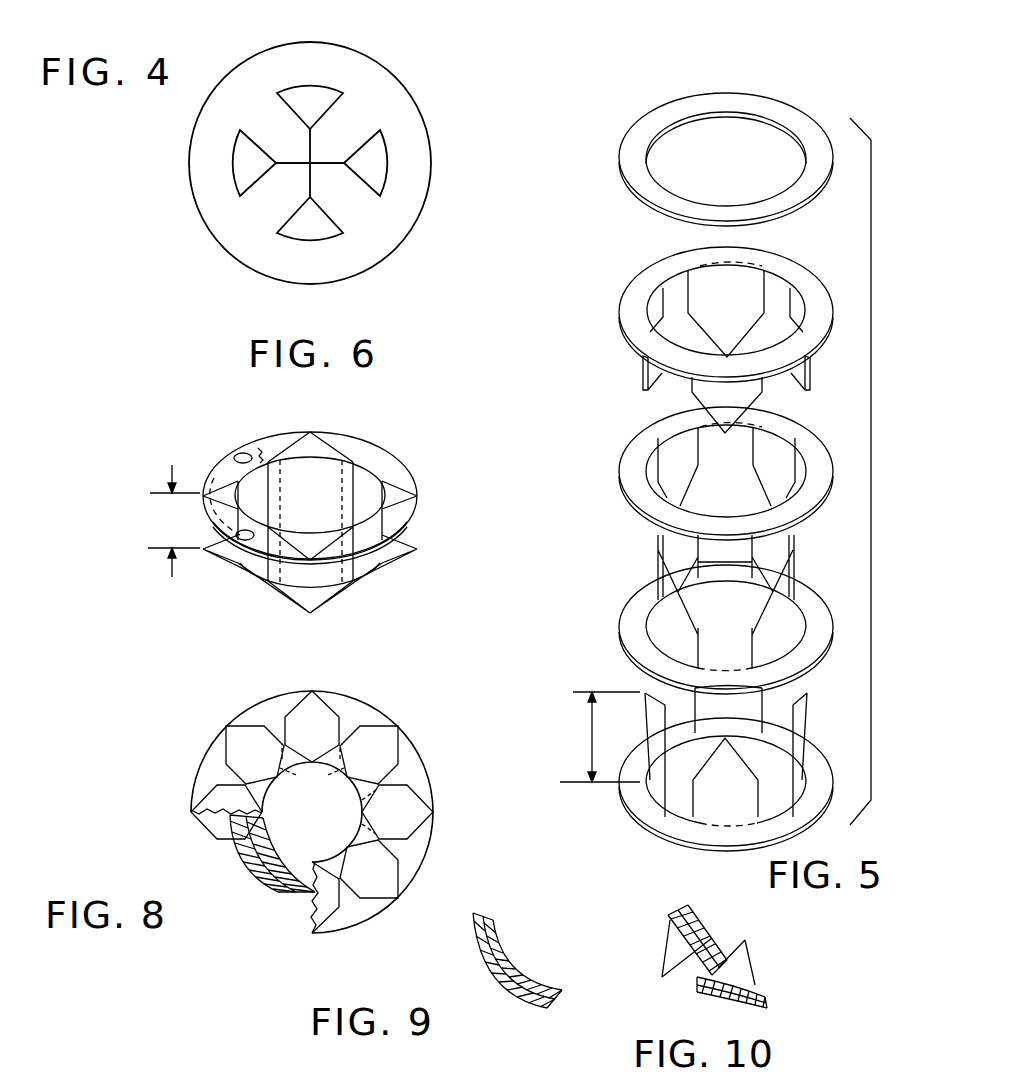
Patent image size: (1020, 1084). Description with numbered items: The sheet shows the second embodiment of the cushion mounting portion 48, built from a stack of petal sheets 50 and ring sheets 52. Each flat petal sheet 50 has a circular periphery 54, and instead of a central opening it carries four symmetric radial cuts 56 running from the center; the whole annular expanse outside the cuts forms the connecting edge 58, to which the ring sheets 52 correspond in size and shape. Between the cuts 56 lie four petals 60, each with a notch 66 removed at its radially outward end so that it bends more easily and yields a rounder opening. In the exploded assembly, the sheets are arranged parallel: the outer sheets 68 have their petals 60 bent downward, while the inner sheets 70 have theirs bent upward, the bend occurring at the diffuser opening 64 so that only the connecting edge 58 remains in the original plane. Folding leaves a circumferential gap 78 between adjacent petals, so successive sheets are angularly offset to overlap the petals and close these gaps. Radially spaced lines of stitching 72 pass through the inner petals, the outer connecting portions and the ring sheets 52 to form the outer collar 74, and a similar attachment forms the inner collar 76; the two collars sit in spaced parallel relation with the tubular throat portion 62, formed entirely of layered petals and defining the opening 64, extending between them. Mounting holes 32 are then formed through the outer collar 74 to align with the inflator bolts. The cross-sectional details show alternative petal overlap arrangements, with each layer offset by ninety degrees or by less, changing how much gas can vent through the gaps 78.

In FIG. 6, the mounting holes 32 is at (244, 450).
In FIG. 6, the mounting portion 48 is at (205, 478).
In FIG. 4, the petal sheets 50 is at (258, 72).
In FIG. 6, the ring sheets 52 is at (253, 452).
In FIG. 5, the ring sheets 52 is at (762, 105).
In FIG. 4, the periphery 54 is at (352, 48).
In FIG. 4, the radial cuts 56 is at (292, 166).
In FIG. 4, the connecting edge 58 is at (418, 172).
In FIG. 6, the connecting edge 58 is at (397, 470).
In FIG. 5, the connecting edge 58 is at (805, 277).
In FIG. 8, the connecting edge 58 is at (413, 772).
In FIG. 4, the petals 60 is at (360, 118).
In FIG. 6, the petals 60 is at (310, 445).
In FIG. 5, the petals 60 is at (807, 363).
In FIG. 8, the petals 60 is at (373, 738).
In FIG. 6, the throat portion 62 is at (310, 570).
In FIG. 6, the diffuser opening 64 is at (285, 443).
In FIG. 4, the notch 66 is at (305, 85).
In FIG. 5, the outer sheets 68 is at (622, 332).
In FIG. 8, the outer sheets 68 is at (252, 847).
In FIG. 9, the outer sheets 68 is at (530, 975).
In FIG. 10, the outer sheets 68 is at (698, 978).
In FIG. 5, the inner sheets 70 is at (618, 628).
In FIG. 8, the inner sheets 70 is at (282, 850).
In FIG. 9, the inner sheets 70 is at (547, 977).
In FIG. 10, the inner sheets 70 is at (745, 942).
In FIG. 6, the lines of stitching 72 is at (216, 468).
In FIG. 6, the outer collar 74 is at (422, 495).
In FIG. 6, the inner collar 76 is at (428, 535).
In FIG. 5, the circumferential gap 78 is at (673, 283).
In FIG. 8, the circumferential gap 78 is at (247, 822).